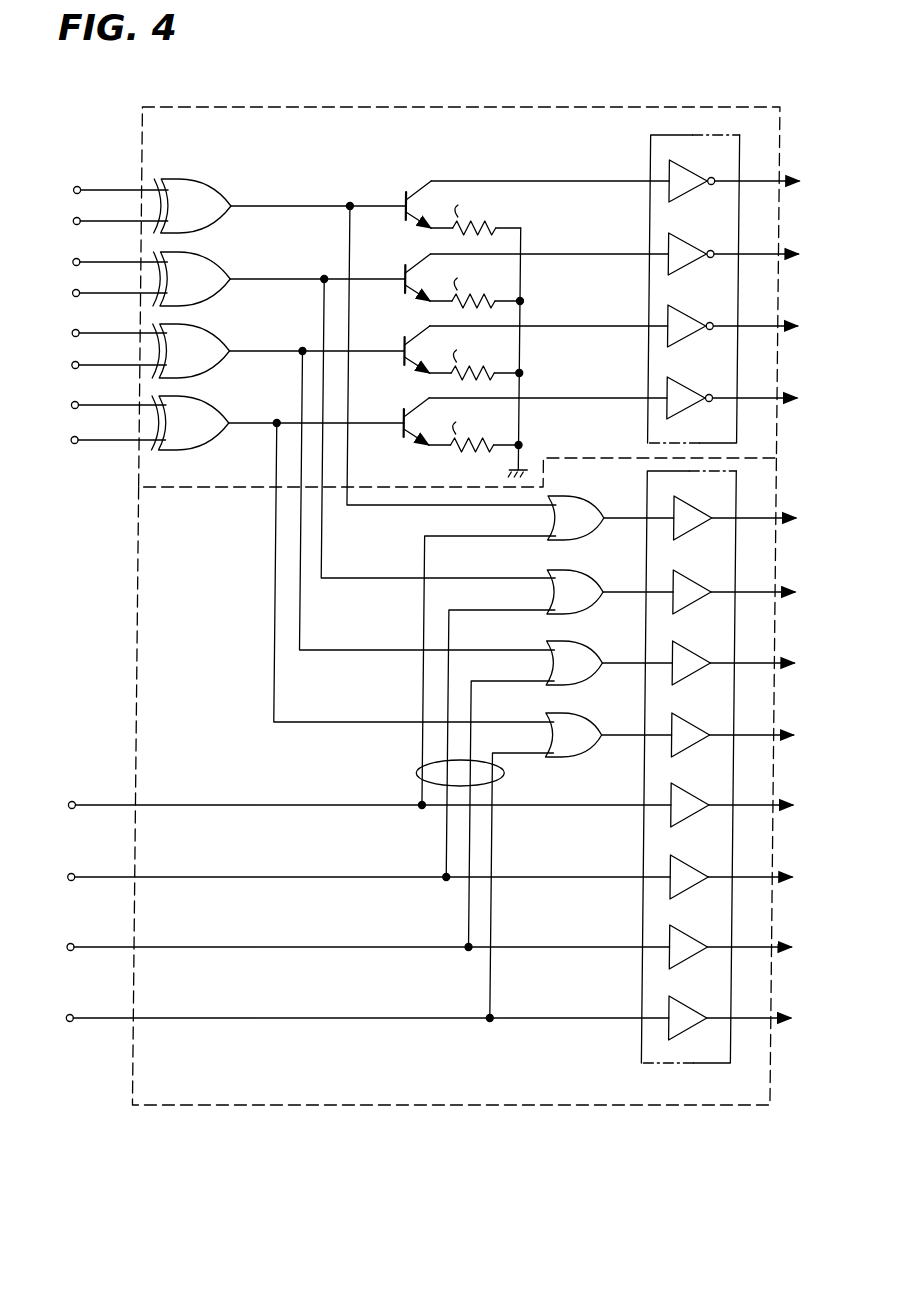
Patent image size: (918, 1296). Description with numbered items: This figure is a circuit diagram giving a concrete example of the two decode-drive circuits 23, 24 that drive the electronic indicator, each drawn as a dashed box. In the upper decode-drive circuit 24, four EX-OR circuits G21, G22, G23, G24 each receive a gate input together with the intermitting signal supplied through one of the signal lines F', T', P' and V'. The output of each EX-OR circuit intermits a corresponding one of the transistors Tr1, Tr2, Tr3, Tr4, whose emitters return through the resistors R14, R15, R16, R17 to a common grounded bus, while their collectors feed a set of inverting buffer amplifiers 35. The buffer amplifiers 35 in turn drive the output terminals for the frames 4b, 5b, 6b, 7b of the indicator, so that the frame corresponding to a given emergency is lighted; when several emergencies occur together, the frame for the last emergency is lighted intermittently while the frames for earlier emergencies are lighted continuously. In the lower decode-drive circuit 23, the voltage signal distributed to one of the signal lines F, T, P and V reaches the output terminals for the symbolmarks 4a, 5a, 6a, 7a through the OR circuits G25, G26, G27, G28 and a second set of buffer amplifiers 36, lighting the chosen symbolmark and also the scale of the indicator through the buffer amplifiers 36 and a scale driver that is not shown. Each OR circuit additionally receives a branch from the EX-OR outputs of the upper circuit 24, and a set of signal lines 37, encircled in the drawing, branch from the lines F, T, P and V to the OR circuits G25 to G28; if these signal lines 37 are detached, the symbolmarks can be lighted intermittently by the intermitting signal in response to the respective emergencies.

The decode-drive circuit 23 is at (417, 686).
The decode-drive circuit 24 is at (407, 265).
The set of buffer amplifiers 35 is at (686, 239).
The set of buffer amplifiers 36 is at (692, 814).
The set of signal lines 37 is at (420, 773).
The EX-OR circuit G21 is at (193, 206).
The EX-OR circuit G22 is at (192, 279).
The EX-OR circuit G23 is at (191, 351).
The EX-OR circuit G24 is at (191, 423).
The OR circuit G25 is at (576, 518).
The OR circuit G26 is at (575, 592).
The OR circuit G27 is at (574, 663).
The OR circuit G28 is at (573, 735).
The transistor Tr1 is at (405, 200).
The transistor Tr2 is at (404, 273).
The transistor Tr3 is at (403, 345).
The transistor Tr4 is at (403, 417).
The resistor R14 is at (476, 215).
The resistor R15 is at (475, 288).
The resistor R16 is at (474, 360).
The resistor R17 is at (473, 432).
The symbolmark 4a is at (743, 512).
The symbolmark 5a is at (742, 586).
The symbolmark 6a is at (741, 657).
The symbolmark 7a is at (740, 729).
The frame 4b is at (743, 177).
The frame 5b is at (742, 250).
The frame 6b is at (742, 322).
The frame 7b is at (741, 394).